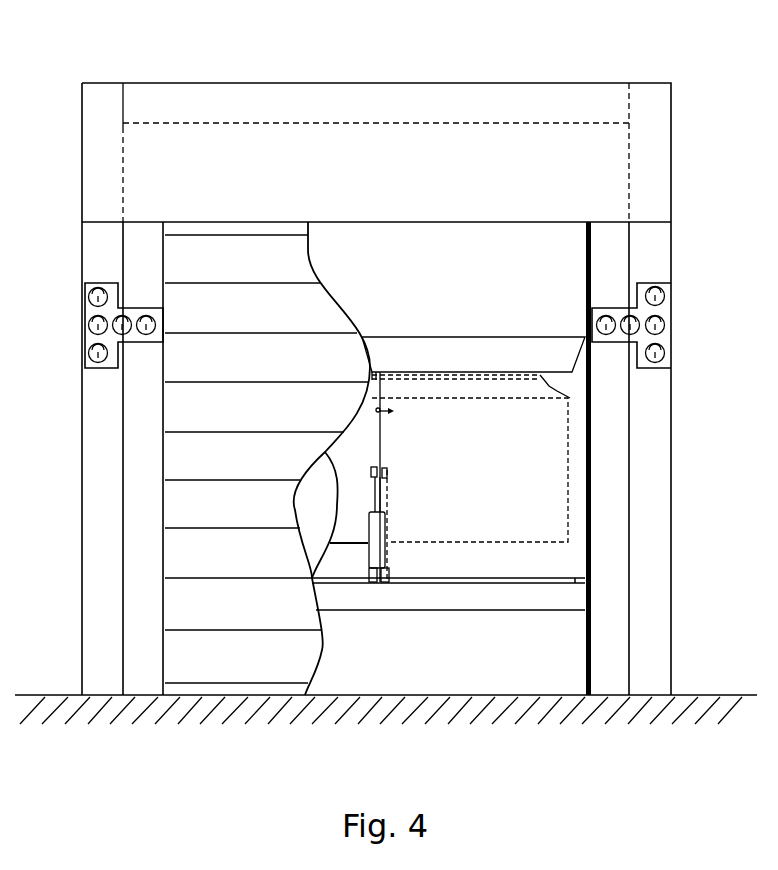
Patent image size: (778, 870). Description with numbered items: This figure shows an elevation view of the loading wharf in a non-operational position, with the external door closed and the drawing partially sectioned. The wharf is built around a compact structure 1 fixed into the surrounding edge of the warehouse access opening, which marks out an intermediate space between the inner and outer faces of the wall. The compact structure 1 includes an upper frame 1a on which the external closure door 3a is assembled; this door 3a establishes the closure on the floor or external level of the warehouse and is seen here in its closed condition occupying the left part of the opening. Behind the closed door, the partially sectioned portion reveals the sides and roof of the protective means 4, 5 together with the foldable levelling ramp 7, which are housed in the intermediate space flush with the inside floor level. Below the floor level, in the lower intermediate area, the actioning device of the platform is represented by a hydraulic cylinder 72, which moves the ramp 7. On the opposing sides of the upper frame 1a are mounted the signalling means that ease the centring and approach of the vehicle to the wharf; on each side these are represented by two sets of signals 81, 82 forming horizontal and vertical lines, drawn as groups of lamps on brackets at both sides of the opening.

The compact structure 1 is at (272, 82).
The upper frame 1a is at (108, 398).
The external closure door 3a is at (212, 607).
The protective means 4 is at (313, 543).
The protective means 5 is at (475, 299).
The foldable ramp 7 is at (355, 457).
The hydraulic cylinder 72 is at (372, 528).
The set of signals 81 is at (140, 319).
The set of signals 82 is at (92, 310).